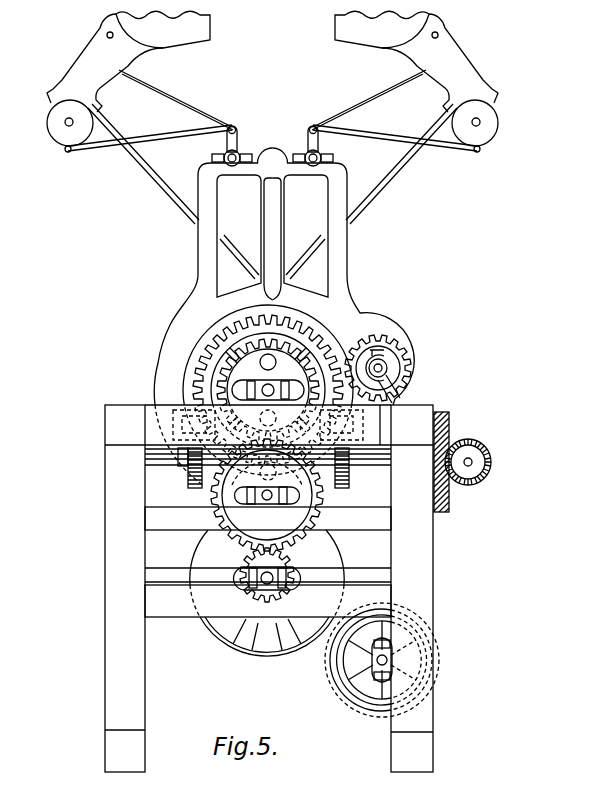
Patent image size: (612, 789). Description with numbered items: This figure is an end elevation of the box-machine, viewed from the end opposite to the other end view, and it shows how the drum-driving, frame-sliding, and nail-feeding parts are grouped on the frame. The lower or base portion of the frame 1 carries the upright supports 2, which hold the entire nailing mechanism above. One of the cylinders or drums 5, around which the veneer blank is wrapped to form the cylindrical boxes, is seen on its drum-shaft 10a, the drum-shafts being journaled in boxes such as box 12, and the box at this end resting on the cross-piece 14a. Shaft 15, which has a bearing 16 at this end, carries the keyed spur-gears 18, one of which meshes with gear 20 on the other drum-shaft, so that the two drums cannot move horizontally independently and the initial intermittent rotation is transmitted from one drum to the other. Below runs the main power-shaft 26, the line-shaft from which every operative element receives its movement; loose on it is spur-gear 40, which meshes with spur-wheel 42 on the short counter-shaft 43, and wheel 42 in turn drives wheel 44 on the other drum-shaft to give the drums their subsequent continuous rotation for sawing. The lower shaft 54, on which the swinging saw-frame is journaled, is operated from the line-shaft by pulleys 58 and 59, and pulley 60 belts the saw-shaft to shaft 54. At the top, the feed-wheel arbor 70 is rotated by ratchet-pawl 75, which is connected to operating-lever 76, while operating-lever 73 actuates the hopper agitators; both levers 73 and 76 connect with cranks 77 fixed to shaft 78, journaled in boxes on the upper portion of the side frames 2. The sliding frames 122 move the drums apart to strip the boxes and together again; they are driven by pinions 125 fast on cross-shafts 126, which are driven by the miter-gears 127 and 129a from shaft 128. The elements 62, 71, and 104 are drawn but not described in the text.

The lower or base portion of the frame 1 is at (269, 588).
The upright supports 2 is at (205, 242).
The cylinders or drums 5 is at (190, 352).
The drum-shaft 10a is at (278, 388).
The box 12 is at (253, 399).
The cross-piece 14a is at (153, 410).
The shaft 15 is at (386, 369).
The bearing 16 is at (394, 398).
The spur-gears 18 is at (396, 348).
The gear 20 is at (312, 337).
The main power-shaft 26 is at (265, 580).
The spur-gear 40 is at (248, 561).
The spur-wheel 42 is at (298, 565).
The short counter-shaft 43 is at (262, 500).
The spur-wheel 44 is at (256, 363).
The lower shaft 54 is at (341, 683).
The pulley 58 is at (247, 650).
The pulley 59 is at (340, 655).
The pulley 60 is at (378, 714).
The handle 62 is at (209, 27).
The arbor 70 is at (66, 125).
The lever 71 is at (272, 63).
The operating-lever 73 is at (197, 107).
The ratchet-pawl 75 is at (65, 152).
The operating-lever 76 is at (141, 137).
The cranks 77 is at (226, 144).
The shaft 78 is at (234, 167).
The rod 104 is at (153, 183).
The sliding frames 122 is at (365, 454).
The pinions 125 is at (196, 486).
The cross-shafts 126 is at (197, 455).
The miter-gear 127 is at (445, 425).
The shaft 128 is at (472, 462).
The miter-gear 129a is at (475, 446).